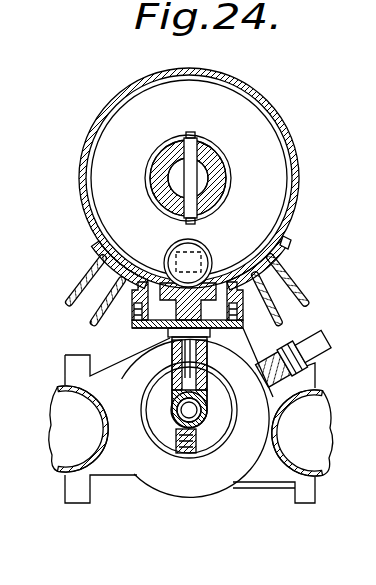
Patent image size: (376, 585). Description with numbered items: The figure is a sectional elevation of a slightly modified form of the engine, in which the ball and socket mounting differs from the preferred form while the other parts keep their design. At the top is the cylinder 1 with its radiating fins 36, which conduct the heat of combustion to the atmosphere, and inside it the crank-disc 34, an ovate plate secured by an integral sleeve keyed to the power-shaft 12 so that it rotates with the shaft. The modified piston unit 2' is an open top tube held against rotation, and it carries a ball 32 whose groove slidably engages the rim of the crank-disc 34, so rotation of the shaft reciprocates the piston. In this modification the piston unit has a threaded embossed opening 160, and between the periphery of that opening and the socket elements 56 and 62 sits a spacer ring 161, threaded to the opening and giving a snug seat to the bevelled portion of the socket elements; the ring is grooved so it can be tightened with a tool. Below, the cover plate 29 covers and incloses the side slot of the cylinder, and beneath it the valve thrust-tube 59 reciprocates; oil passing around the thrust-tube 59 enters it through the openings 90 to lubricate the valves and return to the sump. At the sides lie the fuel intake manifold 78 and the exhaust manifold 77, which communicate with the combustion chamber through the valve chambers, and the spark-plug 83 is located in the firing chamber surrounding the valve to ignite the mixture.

The crank-disc 34 is at (205, 95).
The power-shaft 12 is at (213, 147).
The piston unit 2' is at (209, 178).
The threaded embossed opening 160 is at (150, 280).
The fins 36 is at (95, 276).
The valve thrust element 62 is at (134, 304).
The cover plate 29 is at (129, 329).
The ball 32 is at (198, 258).
The cylinder 1 is at (291, 243).
The spacer ring 161 is at (282, 262).
The valve thrust element 56 is at (243, 293).
The spark-plug 83 is at (363, 327).
The fuel intake manifold 78 is at (58, 398).
The exhaust manifold 77 is at (356, 376).
The openings 90 is at (178, 388).
The valve thrust-tube 59 is at (176, 427).